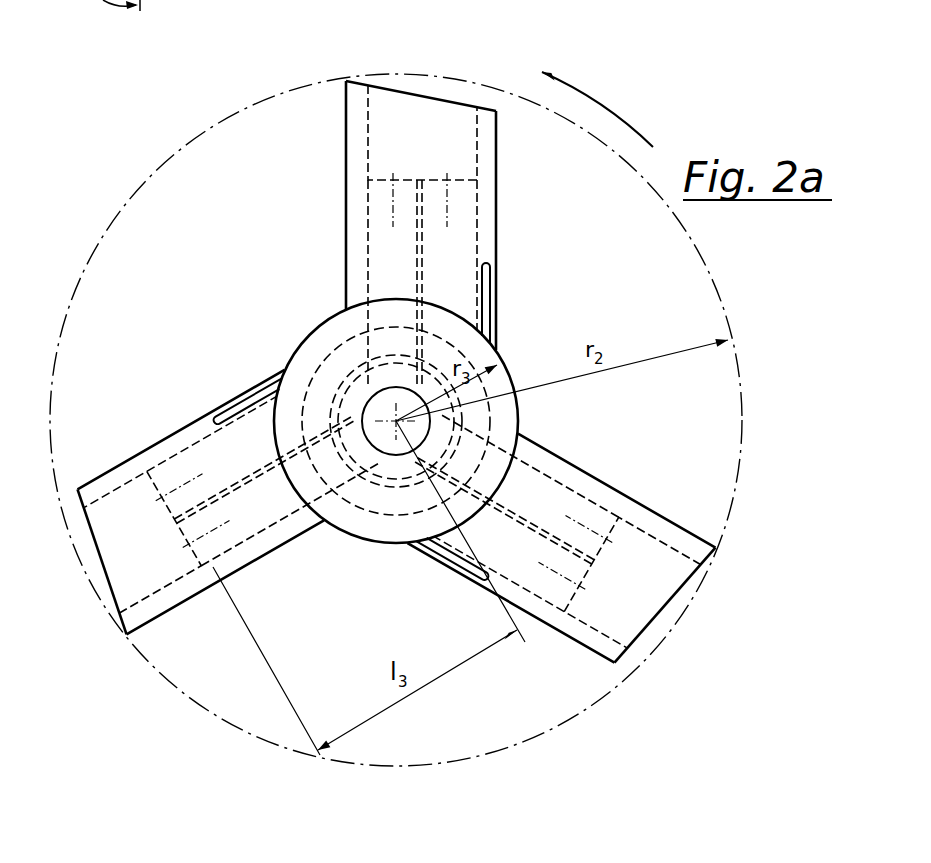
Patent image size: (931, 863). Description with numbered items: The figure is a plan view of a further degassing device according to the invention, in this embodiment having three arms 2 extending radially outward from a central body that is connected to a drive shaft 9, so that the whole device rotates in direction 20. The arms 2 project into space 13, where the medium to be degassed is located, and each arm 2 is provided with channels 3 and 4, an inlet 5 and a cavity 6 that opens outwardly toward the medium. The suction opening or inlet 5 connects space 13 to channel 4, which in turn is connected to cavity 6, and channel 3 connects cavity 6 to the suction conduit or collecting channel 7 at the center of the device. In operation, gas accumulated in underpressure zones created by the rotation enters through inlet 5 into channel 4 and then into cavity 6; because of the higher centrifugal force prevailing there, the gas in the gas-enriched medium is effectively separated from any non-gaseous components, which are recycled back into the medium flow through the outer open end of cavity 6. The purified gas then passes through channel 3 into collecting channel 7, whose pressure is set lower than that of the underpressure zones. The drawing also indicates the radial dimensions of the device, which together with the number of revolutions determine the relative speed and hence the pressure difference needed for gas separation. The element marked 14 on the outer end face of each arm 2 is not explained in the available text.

The arm 2 is at (488, 165).
The channel 3 is at (387, 230).
The channel 4 is at (462, 240).
The inlet 5 is at (487, 317).
The cavity 6 is at (423, 130).
The collecting channel 7 is at (385, 447).
The drive shaft 9 is at (330, 335).
The space 13 is at (194, 244).
The end face 14 is at (445, 98).
The direction of rotation 20 is at (607, 106).